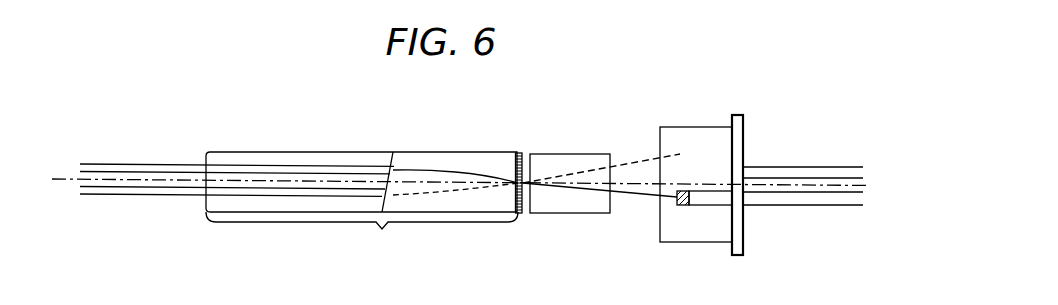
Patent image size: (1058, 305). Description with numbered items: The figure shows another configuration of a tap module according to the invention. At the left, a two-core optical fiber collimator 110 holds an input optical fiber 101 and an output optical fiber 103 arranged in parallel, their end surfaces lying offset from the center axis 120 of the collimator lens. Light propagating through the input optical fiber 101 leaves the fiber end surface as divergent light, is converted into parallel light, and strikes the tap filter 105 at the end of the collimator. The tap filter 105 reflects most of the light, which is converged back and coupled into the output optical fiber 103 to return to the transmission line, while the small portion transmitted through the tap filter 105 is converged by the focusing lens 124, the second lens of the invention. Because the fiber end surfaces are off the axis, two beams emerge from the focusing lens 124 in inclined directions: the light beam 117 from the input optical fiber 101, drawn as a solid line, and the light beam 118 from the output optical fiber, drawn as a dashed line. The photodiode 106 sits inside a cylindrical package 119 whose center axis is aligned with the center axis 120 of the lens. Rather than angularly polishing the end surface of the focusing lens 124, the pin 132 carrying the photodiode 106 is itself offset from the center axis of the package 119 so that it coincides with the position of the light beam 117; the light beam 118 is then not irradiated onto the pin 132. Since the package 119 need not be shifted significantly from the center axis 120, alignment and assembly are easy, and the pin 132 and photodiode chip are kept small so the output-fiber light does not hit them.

The input optical fiber 101 is at (140, 162).
The output optical fiber 103 is at (138, 197).
The tap filter 105 is at (519, 151).
The photodiode 106 is at (677, 205).
The two-core optical fiber collimator 110 is at (362, 205).
The light beam from the input optical fiber 117 is at (622, 204).
The light beam from the output optical fiber 118 is at (628, 165).
The package 119 is at (697, 147).
The center axis 120 is at (414, 183).
The focusing lens 124 is at (573, 154).
The pin 132 is at (712, 205).